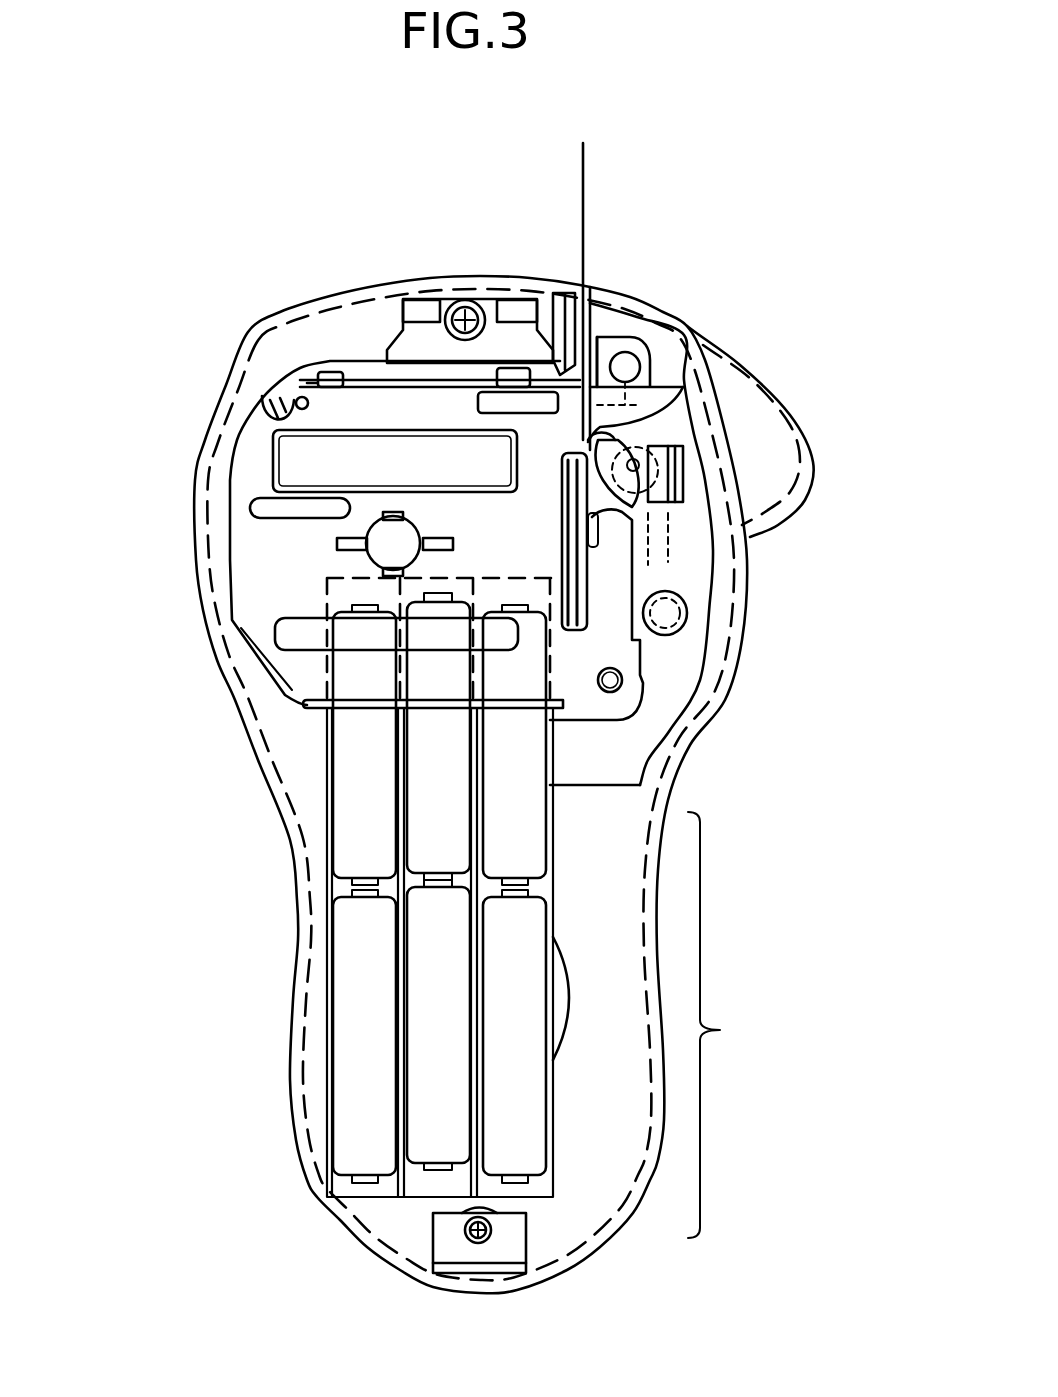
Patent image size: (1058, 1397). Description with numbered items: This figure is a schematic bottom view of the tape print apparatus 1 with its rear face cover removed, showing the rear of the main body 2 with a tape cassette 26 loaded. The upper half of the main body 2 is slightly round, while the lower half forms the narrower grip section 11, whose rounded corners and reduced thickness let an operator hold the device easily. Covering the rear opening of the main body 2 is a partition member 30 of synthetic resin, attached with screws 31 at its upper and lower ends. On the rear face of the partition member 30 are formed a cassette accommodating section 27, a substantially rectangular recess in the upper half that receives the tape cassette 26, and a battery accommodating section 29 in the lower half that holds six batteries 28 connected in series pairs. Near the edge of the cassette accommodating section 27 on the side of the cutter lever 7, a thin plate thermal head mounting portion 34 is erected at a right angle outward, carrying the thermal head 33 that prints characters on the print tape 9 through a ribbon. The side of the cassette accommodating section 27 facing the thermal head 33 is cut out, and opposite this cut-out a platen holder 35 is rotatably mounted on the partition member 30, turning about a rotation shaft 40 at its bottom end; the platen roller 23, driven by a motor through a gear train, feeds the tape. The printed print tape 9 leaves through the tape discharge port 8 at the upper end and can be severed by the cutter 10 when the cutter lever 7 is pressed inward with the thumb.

The tape print apparatus 1 is at (657, 222).
The main body 2 is at (262, 333).
The cutter lever 7 is at (773, 407).
The tape discharge port 8 is at (573, 290).
The print tape 9 is at (583, 208).
The cutter 10 is at (627, 352).
The grip section 11 is at (728, 1025).
The platen roller 23 is at (683, 390).
The tape cassette 26 is at (278, 557).
The cassette accommodating section 27 is at (300, 384).
The batteries 28 is at (523, 805).
The battery accommodating section 29 is at (363, 1198).
The partition member 30 is at (597, 833).
The screws 31 is at (462, 307).
The thermal head 33 is at (600, 513).
The thermal head mounting portion 34 is at (587, 540).
The platen holder 35 is at (657, 550).
The rotation shaft 40 is at (668, 618).